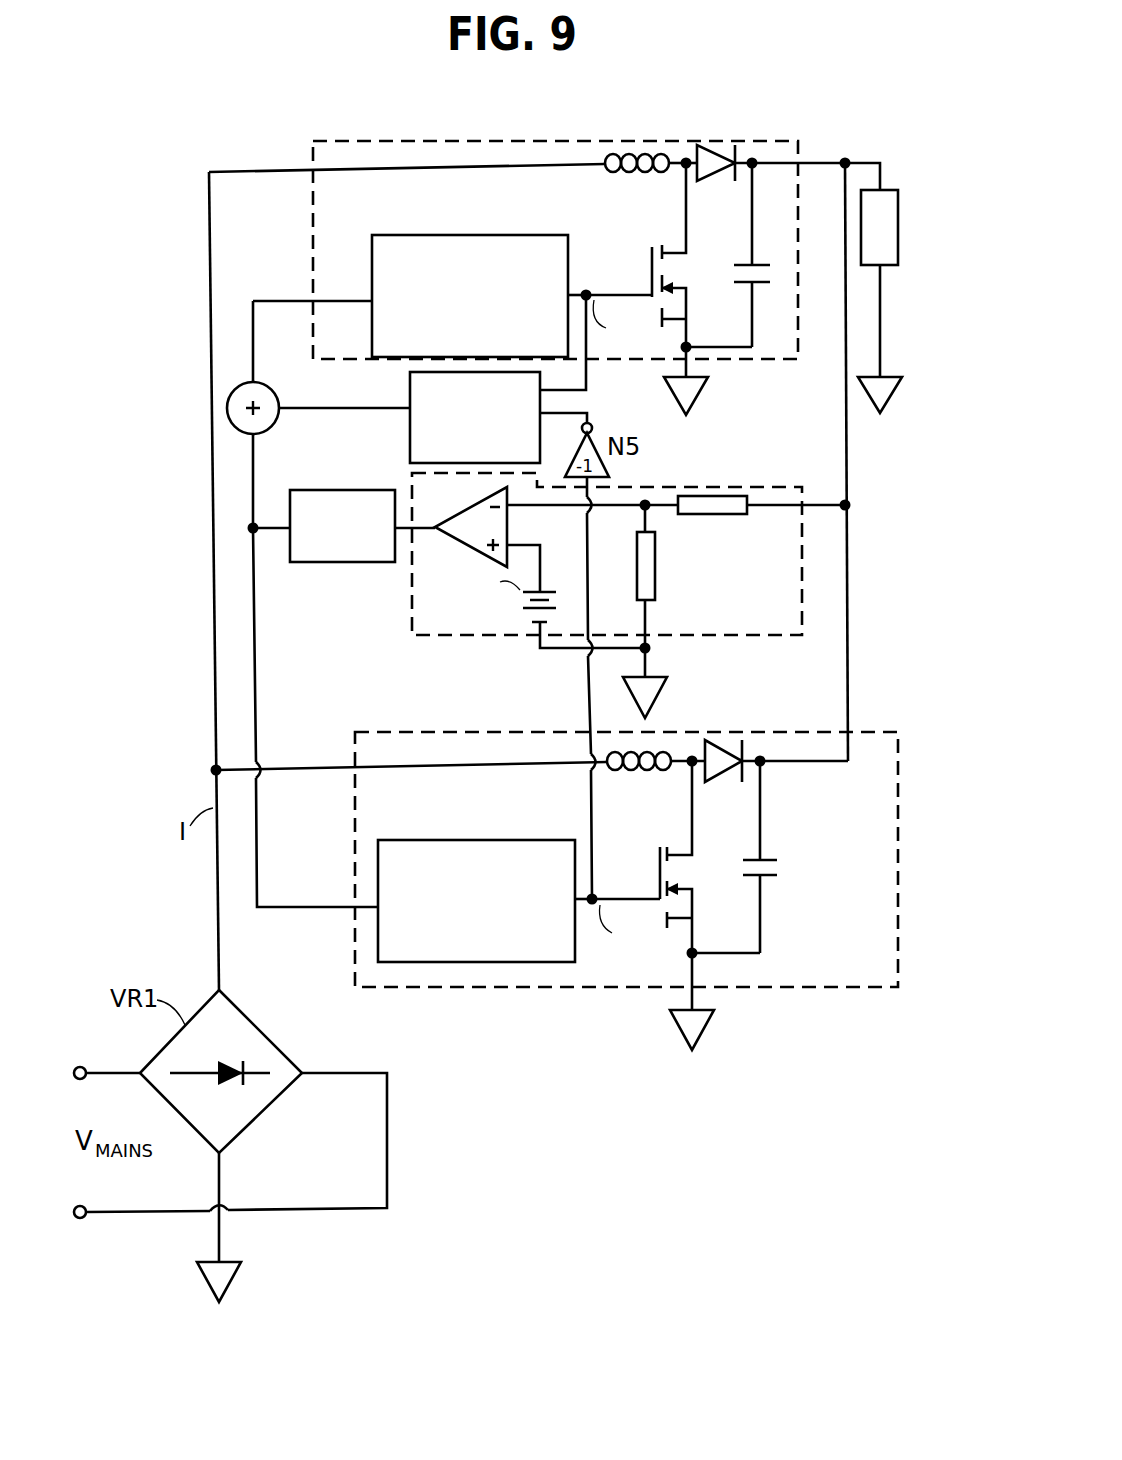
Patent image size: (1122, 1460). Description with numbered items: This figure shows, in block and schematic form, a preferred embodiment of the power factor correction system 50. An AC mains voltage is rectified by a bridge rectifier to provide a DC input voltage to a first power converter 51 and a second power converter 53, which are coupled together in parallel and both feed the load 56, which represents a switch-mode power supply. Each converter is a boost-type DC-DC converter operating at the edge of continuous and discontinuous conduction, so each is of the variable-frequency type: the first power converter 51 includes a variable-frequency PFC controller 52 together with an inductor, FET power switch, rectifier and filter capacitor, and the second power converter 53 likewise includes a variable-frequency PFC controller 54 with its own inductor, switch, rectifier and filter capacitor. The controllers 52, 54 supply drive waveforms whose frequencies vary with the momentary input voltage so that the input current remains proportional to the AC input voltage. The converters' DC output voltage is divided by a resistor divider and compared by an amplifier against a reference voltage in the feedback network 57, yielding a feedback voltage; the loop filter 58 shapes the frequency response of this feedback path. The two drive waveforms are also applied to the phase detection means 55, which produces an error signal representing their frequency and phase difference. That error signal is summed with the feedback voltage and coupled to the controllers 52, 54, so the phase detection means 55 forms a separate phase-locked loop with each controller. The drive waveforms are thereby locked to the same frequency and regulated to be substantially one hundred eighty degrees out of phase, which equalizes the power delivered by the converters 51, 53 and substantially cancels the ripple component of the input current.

The system 50 is at (553, 117).
The first power converter 51 is at (632, 137).
The variable-frequency PFC controller 52 is at (432, 236).
The second power converter 53 is at (755, 988).
The variable-frequency PFC controller 54 is at (437, 840).
The phase detection means 55 is at (408, 423).
The load 56 is at (898, 240).
The feedback network 57 is at (740, 637).
The loop filter 58 is at (345, 565).